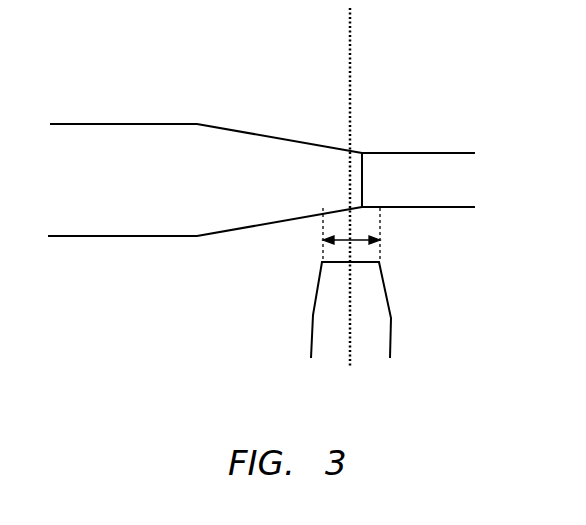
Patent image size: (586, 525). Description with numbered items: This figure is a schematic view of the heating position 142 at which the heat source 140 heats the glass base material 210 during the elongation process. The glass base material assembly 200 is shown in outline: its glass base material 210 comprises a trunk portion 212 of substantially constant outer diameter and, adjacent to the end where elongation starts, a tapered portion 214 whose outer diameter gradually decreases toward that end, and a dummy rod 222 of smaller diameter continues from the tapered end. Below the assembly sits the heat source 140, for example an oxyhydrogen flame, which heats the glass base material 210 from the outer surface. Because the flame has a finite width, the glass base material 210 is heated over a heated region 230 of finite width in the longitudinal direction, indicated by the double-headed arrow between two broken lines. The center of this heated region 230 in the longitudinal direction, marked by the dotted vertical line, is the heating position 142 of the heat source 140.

The heat source 140 is at (314, 302).
The heating position 142 is at (347, 77).
The glass base material assembly 200 is at (383, 95).
The glass base material 210 is at (135, 47).
The trunk portion 212 is at (110, 124).
The tapered portion 214 is at (287, 138).
The dummy rod 222 is at (432, 153).
The heated region 230 is at (357, 242).